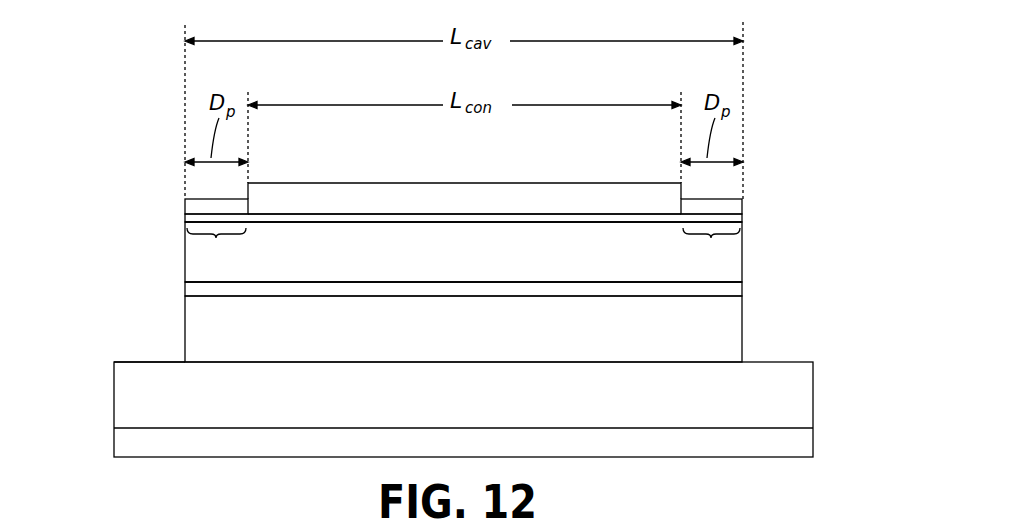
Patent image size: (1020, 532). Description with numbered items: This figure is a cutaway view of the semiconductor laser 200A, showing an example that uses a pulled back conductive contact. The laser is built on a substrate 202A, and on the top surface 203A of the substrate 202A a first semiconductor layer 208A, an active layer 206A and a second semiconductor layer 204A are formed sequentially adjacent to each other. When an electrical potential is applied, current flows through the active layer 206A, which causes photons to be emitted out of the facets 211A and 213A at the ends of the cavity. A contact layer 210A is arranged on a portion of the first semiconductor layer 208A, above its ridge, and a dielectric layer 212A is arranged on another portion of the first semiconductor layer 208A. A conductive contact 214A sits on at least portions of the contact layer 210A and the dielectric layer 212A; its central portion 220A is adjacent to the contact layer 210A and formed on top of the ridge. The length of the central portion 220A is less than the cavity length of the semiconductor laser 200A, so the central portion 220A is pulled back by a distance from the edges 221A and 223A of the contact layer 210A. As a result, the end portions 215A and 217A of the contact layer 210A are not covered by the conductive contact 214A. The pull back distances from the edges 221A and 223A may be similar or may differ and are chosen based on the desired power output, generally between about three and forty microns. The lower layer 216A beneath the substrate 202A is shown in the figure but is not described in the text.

The semiconductor laser 200A is at (782, 58).
The substrate 202A is at (808, 395).
The top surface 203A is at (160, 361).
The second semiconductor layer 204A is at (737, 322).
The active layer 206A is at (744, 293).
The first semiconductor layer 208A is at (737, 272).
The contact layer 210A is at (743, 222).
The facet 211A is at (743, 285).
The dielectric layer 212A is at (192, 210).
The facet 213A is at (190, 288).
The conductive contact 214A is at (369, 200).
The end portion 215A is at (217, 247).
The bottom electrode 216A is at (198, 447).
The end portion 217A is at (711, 247).
The central portion 220A is at (548, 182).
The edge 221A is at (190, 218).
The edge 223A is at (743, 215).